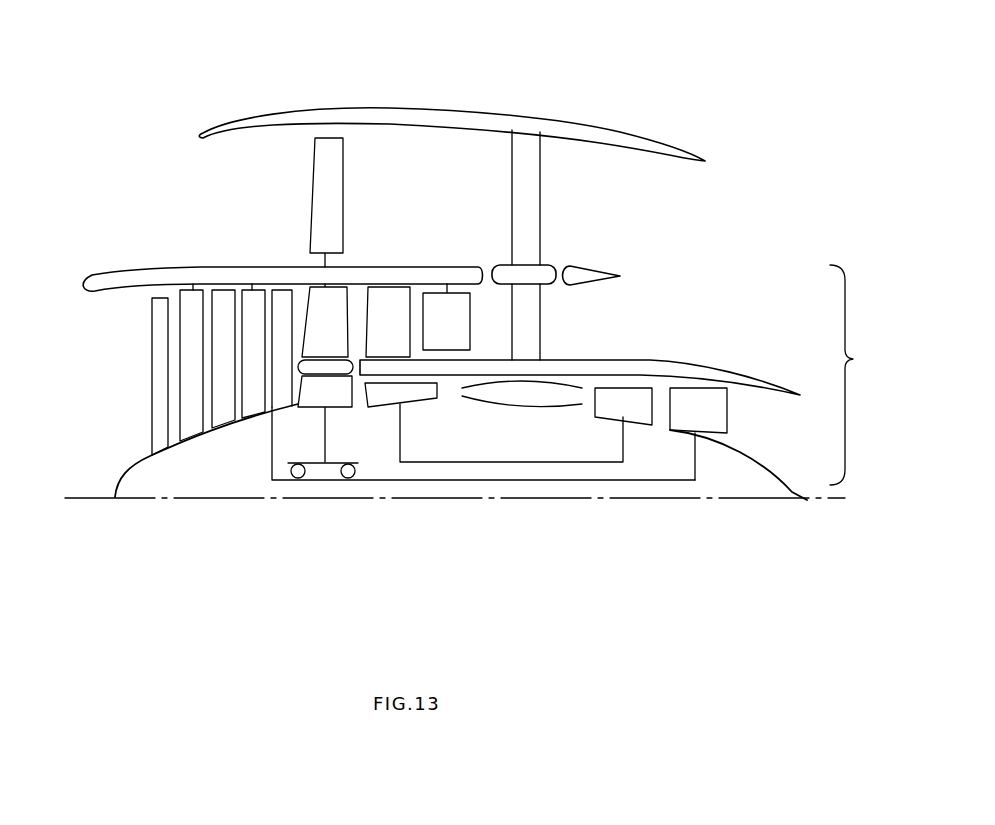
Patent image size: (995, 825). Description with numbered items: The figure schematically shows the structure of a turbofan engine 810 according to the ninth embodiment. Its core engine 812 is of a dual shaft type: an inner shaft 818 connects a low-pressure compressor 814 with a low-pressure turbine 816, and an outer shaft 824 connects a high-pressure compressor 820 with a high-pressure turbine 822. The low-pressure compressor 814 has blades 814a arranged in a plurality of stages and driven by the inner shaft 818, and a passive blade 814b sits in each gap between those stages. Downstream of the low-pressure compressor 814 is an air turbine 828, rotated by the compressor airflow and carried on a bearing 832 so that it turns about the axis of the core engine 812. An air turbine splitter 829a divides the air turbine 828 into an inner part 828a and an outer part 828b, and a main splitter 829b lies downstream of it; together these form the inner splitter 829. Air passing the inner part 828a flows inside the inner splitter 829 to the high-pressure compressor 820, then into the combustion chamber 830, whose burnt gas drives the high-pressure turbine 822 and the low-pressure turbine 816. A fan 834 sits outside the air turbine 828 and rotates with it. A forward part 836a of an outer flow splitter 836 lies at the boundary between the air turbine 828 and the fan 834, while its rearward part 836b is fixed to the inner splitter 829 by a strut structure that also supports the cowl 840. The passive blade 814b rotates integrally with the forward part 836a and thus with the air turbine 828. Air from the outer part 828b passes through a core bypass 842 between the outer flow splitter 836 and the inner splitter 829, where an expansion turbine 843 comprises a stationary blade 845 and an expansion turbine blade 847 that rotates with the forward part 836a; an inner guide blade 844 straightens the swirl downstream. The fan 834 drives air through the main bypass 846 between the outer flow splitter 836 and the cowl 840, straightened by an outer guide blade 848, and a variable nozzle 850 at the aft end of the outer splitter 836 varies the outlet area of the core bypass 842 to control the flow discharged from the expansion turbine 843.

The turbofan engine 810 is at (743, 177).
The core engine 812 is at (920, 366).
The low-pressure compressor 814 is at (207, 443).
The blades 814a is at (160, 395).
The passive blade 814b is at (252, 300).
The low-pressure turbine 816 is at (718, 416).
The inner shaft 818 is at (640, 480).
The high-pressure compressor 820 is at (423, 396).
The high-pressure turbine 822 is at (695, 478).
The outer shaft 824 is at (576, 460).
The air turbine 828 is at (348, 290).
The inner part of the air turbine 828a is at (313, 393).
The outer part of the air turbine 828b is at (338, 322).
The inner splitter 829 is at (720, 358).
The air turbine splitter 829a is at (323, 368).
The main splitter 829b is at (653, 366).
The combustion chamber 830 is at (520, 410).
The bearing 832 is at (300, 475).
The fan 834 is at (325, 195).
The outer flow splitter 836 is at (112, 268).
The forward part of the outer flow splitter 836a is at (148, 277).
The rearward part of the outer flow splitter 836b is at (543, 277).
The cowl 840 is at (358, 100).
The core bypass 842 is at (505, 326).
The expansion turbine 843 is at (480, 297).
The inner guide blade 844 is at (527, 303).
The stationary blade 845 is at (395, 293).
The main bypass 846 is at (473, 173).
The expansion turbine blade 847 is at (462, 338).
The outer guide blade 848 is at (532, 185).
The variable nozzle 850 is at (593, 272).